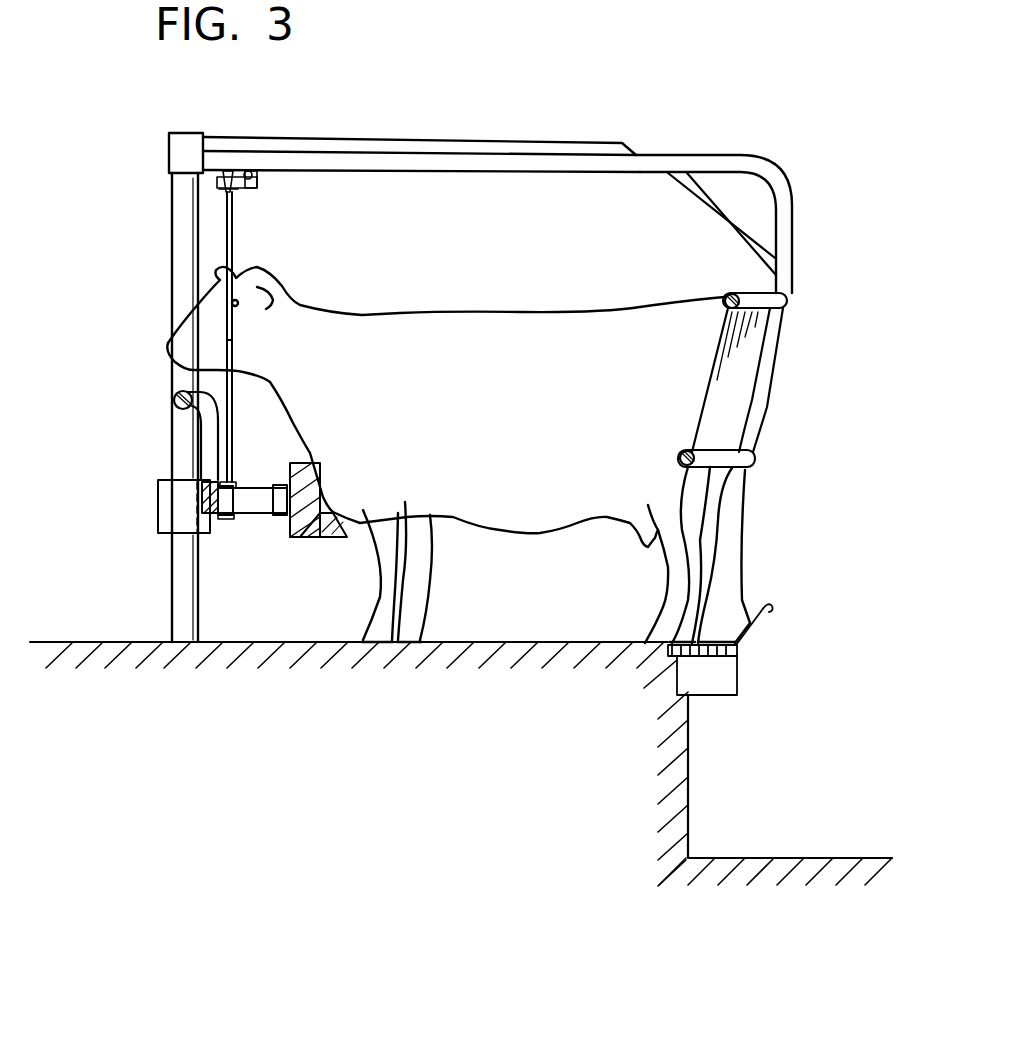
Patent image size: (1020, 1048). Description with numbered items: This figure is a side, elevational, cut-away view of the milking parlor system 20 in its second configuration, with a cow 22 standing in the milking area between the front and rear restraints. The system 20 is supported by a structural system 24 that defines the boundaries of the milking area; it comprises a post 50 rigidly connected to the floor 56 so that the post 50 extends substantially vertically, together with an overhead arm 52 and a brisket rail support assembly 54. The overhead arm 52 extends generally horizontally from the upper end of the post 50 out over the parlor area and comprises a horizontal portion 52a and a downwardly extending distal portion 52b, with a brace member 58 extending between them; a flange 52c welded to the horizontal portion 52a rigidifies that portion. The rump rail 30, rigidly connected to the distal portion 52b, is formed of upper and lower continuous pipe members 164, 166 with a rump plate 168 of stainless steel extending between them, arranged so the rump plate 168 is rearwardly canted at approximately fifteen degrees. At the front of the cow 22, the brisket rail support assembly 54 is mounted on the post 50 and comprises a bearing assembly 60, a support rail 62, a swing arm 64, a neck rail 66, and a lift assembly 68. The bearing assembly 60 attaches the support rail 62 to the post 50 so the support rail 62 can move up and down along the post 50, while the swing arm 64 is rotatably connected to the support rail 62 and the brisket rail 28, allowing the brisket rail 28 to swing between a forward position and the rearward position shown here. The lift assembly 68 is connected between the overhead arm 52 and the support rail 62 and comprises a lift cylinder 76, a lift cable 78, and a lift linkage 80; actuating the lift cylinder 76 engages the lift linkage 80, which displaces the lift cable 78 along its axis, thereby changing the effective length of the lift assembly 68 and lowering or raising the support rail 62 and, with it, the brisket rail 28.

The milking parlor system 20 is at (768, 152).
The cow 22 is at (432, 324).
The structural system 24 is at (212, 387).
The brisket rail 28 is at (313, 538).
The rump rail 30 is at (746, 382).
The post 50 is at (178, 450).
The overhead arm 52 is at (540, 184).
The horizontal portion 52a is at (633, 165).
The distal portion 52b is at (783, 266).
The flange 52c is at (416, 147).
The brisket rail support assembly 54 is at (250, 514).
The floor 56 is at (218, 636).
The brace member 58 is at (700, 197).
The bearing assembly 60 is at (158, 507).
The support rail 62 is at (222, 515).
The swing arm 64 is at (257, 485).
The neck rail 66 is at (178, 396).
The lift assembly 68 is at (243, 207).
The lift cylinder 76 is at (236, 194).
The lift cable 78 is at (236, 243).
The lift linkage 80 is at (258, 176).
The upper pipe member 164 is at (748, 293).
The lower pipe member 166 is at (740, 462).
The rump plate 168 is at (741, 396).